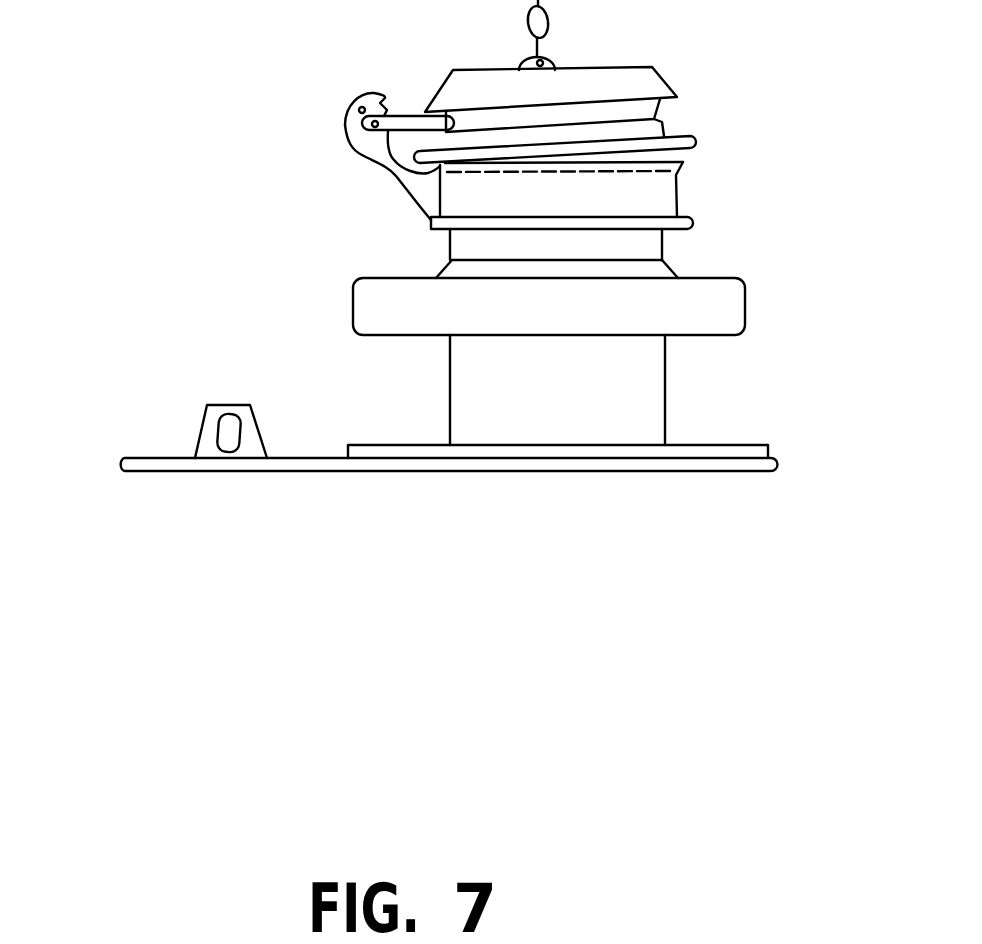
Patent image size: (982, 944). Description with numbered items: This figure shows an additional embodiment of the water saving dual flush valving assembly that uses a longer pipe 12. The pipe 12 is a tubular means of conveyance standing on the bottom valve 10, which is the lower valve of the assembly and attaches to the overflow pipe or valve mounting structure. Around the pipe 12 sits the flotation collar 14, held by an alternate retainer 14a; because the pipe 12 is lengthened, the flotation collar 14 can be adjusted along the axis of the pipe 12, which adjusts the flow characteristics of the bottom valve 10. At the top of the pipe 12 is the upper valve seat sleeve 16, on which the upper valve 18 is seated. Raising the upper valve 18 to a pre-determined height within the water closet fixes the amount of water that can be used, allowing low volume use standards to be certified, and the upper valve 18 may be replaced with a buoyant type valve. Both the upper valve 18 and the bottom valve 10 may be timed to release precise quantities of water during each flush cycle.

The bottom valve 10 is at (153, 458).
The pipe 12 is at (665, 400).
The flotation collar 14 is at (745, 292).
The alternate retainer for flotation collar 14a is at (442, 273).
The upper valve seat sleeve 16 is at (677, 198).
The upper valve 18 is at (667, 68).